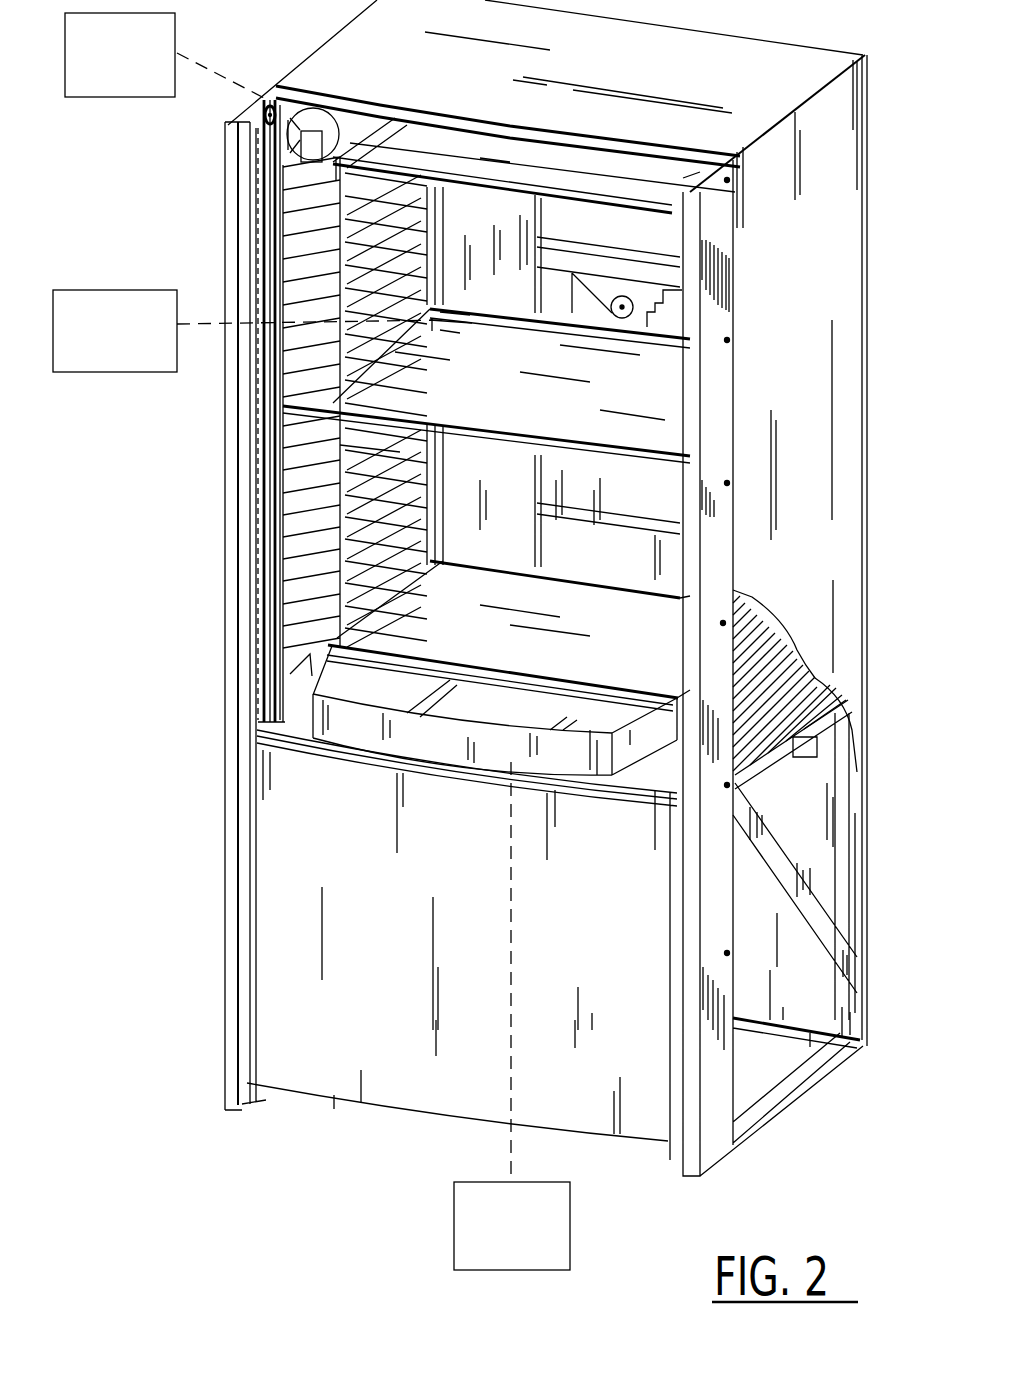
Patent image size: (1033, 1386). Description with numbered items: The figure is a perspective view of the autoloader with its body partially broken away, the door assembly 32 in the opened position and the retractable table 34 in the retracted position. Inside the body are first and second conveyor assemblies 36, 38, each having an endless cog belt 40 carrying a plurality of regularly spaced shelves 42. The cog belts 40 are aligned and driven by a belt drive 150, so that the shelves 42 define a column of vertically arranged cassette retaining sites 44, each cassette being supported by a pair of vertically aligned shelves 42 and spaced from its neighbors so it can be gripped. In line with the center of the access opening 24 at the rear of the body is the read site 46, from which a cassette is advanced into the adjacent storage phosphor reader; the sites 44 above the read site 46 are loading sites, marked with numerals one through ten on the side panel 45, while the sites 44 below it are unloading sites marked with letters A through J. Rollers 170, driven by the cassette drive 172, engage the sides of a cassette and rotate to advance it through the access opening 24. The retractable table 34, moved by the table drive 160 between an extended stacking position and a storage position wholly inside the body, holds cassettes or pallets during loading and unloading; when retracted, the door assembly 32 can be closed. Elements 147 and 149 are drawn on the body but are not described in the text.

The access opening 24 is at (488, 290).
The door assembly 32 is at (326, 1108).
The retractable table 34 is at (435, 754).
The first conveyor assembly 36 is at (328, 210).
The second conveyor assembly 38 is at (690, 183).
The endless cog belt 40 is at (376, 626).
The shelves 42 is at (333, 297).
The cassette retaining sites 44 is at (283, 375).
The side panel 45 is at (312, 245).
The read site 46 is at (290, 403).
The side panel 147 is at (688, 418).
The frame post 149 is at (697, 388).
The belt drive 150 is at (177, 33).
The table drive 160 is at (571, 1219).
The rollers 170 is at (447, 330).
The cassette drive 172 is at (100, 378).